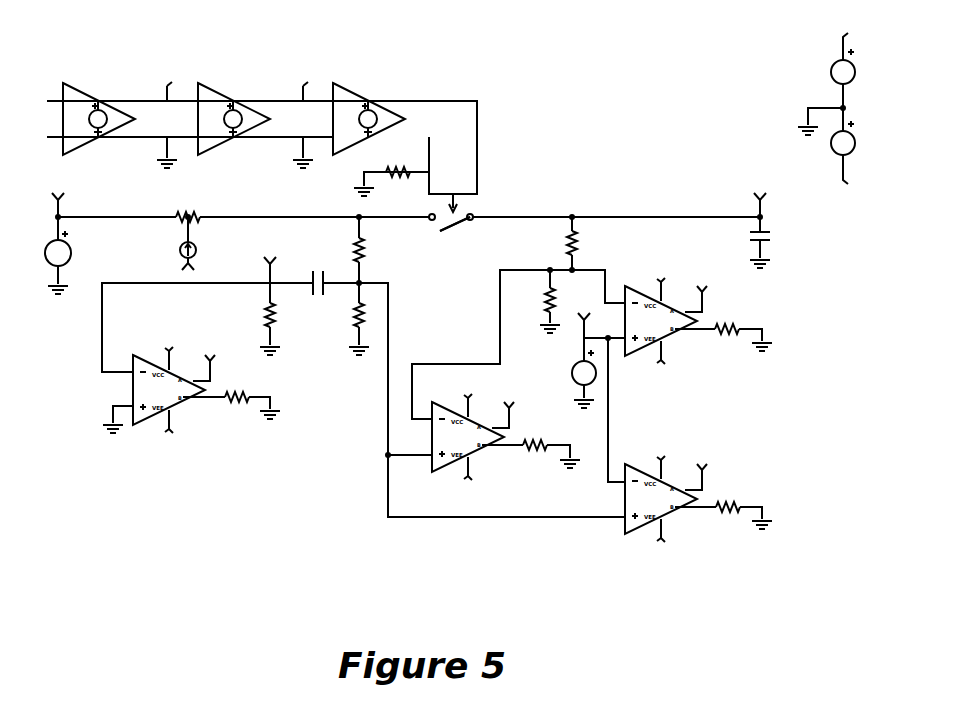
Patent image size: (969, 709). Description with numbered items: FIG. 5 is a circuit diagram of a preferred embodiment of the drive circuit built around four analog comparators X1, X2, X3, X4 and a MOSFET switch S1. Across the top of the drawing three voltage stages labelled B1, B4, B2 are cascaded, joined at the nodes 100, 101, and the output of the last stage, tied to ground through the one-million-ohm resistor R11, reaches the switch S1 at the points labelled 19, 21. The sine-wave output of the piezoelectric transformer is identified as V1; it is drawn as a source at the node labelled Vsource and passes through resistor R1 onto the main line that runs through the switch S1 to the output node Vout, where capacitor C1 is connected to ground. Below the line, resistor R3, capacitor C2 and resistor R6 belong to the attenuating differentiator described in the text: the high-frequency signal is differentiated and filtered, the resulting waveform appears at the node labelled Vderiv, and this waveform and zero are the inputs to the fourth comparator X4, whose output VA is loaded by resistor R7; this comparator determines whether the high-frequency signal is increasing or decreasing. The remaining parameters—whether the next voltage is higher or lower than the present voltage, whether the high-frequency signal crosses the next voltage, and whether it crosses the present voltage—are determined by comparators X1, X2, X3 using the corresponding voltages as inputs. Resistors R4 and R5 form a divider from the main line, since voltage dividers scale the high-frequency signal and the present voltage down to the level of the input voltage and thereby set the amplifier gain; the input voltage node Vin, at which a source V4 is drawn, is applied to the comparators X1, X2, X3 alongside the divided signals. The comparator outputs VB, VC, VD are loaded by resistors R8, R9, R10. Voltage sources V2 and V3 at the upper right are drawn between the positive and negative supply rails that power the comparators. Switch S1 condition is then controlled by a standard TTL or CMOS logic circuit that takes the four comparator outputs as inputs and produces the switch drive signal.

The node between first and second voltage buffers 100 is at (166, 115).
The node between second and third voltage buffers 101 is at (302, 115).
The switch control node 19 is at (453, 180).
The switch control node 21 is at (490, 172).
The voltage buffer B1 is at (99, 97).
The voltage buffer B4 is at (234, 97).
The voltage buffer B2 is at (369, 97).
The resistor R11 is at (398, 162).
The switch S1 is at (455, 236).
The source voltage node Vsource is at (55, 197).
The piezoelectric transformer output V1 is at (71, 255).
The resistor R1 is at (188, 231).
The derivative voltage node Vderiv is at (270, 262).
The capacitor C2 is at (317, 273).
The resistor R6 is at (257, 319).
The resistor R3 is at (343, 282).
The fourth comparator X4 is at (164, 389).
The resistor R7 is at (252, 407).
The comparator X3 is at (464, 436).
The resistor R9 is at (551, 455).
The resistor R4 is at (556, 243).
The resistor R5 is at (536, 300).
The input voltage node Vin is at (583, 318).
The voltage source V4 is at (572, 373).
The comparator X1 is at (657, 320).
The resistor R8 is at (743, 339).
The comparator X2 is at (657, 498).
The resistor R10 is at (743, 518).
The output voltage node Vout is at (760, 197).
The capacitor C1 is at (747, 242).
The supply voltage source V2 is at (859, 61).
The supply voltage source V3 is at (843, 154).